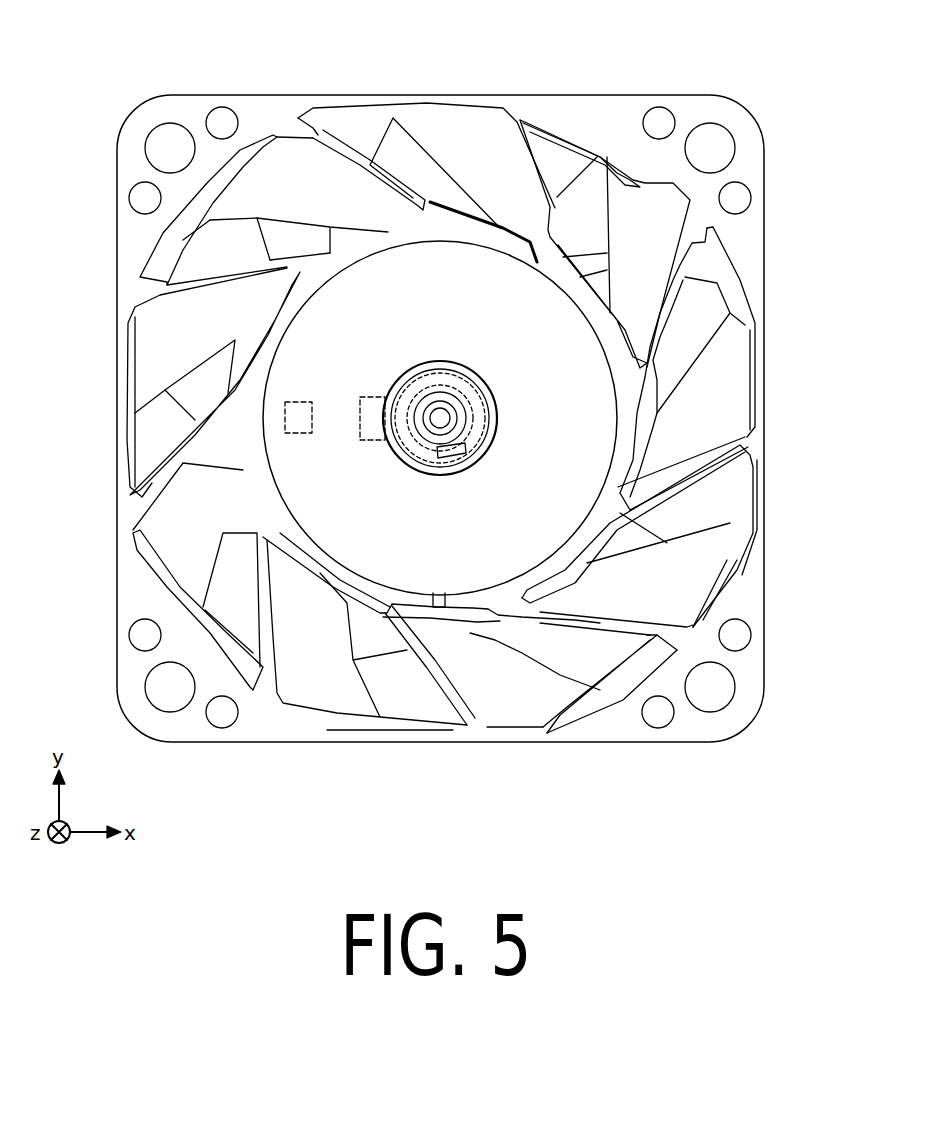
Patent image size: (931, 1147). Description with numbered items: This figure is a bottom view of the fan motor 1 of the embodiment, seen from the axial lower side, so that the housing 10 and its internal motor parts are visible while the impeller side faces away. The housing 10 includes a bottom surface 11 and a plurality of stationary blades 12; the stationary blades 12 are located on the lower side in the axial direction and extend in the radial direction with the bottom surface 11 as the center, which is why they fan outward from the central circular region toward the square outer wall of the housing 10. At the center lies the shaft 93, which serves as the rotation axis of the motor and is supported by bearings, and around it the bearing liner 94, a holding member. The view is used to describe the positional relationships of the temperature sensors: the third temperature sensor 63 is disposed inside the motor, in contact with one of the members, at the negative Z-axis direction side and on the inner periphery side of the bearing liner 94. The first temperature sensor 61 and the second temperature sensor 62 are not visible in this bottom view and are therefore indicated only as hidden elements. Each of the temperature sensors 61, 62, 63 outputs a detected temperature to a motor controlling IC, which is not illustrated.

The fan motor 1 is at (678, 68).
The housing 10 is at (548, 96).
The bottom surface 11 is at (407, 550).
The stationary blades 12 is at (722, 395).
The first temperature sensor 61 is at (299, 434).
The second temperature sensor 62 is at (373, 441).
The third temperature sensor 63 is at (450, 460).
The shaft 93 is at (440, 417).
The bearing liner 94 is at (410, 376).